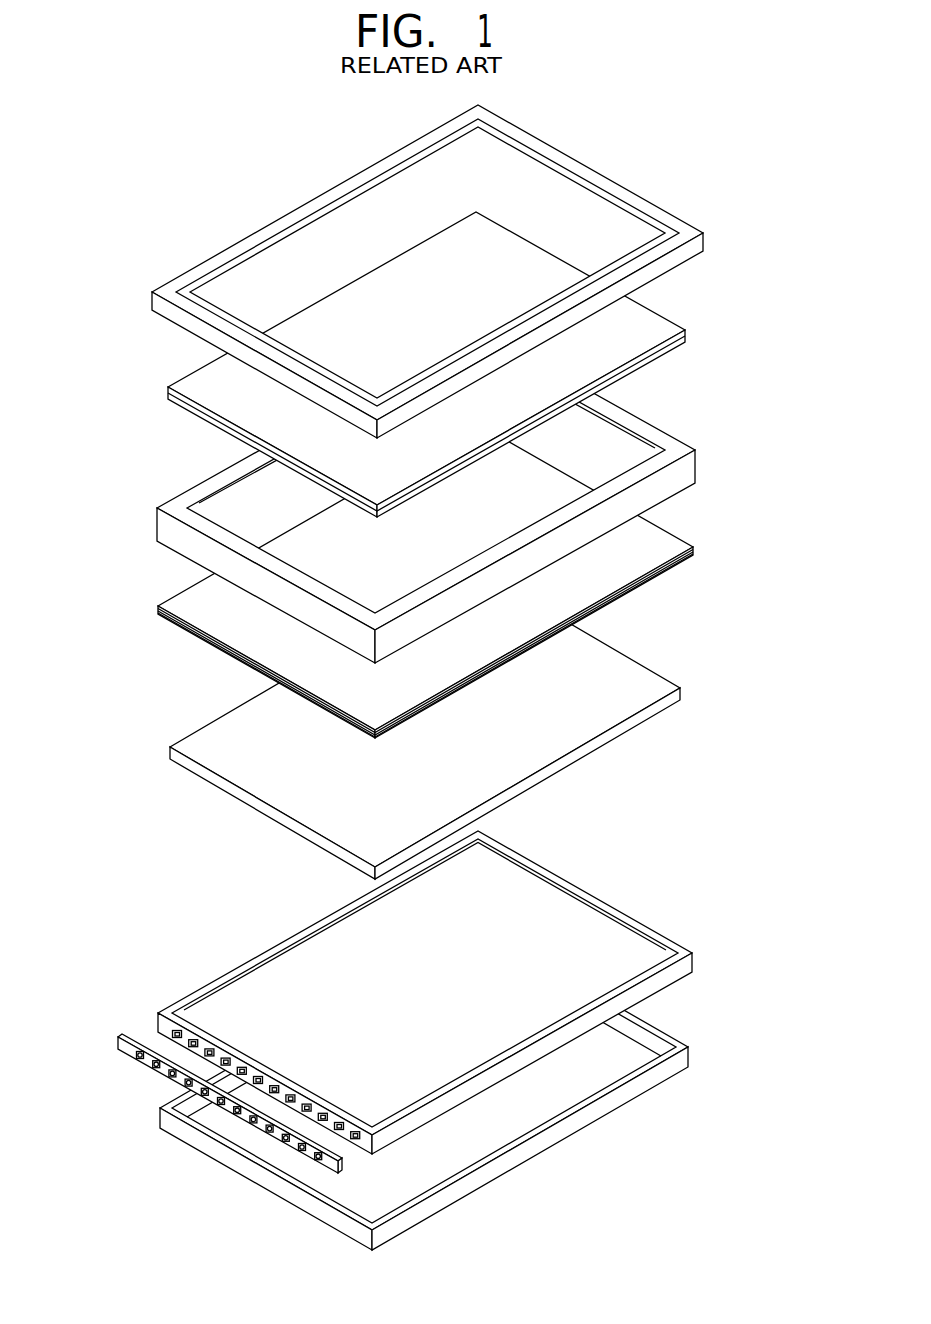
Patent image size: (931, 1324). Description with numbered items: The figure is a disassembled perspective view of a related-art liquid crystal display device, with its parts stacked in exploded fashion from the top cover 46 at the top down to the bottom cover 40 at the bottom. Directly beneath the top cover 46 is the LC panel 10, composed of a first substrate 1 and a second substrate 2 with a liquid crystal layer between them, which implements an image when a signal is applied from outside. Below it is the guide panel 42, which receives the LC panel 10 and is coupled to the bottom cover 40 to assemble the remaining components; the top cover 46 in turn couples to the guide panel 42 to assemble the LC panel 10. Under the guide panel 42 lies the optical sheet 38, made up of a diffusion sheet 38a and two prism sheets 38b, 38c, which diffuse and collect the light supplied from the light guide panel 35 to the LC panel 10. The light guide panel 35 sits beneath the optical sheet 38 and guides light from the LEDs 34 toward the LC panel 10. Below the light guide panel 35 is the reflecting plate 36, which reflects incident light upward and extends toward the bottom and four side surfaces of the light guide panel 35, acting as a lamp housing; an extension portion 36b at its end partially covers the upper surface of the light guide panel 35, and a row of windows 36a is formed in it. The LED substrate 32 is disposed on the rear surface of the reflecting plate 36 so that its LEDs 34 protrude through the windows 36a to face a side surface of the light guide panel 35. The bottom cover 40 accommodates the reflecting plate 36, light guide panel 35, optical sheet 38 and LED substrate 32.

The LC panel 10 is at (682, 304).
The top cover 46 is at (698, 244).
The second substrate 2 is at (453, 364).
The first substrate 1 is at (683, 339).
The guide panel 42 is at (683, 449).
The optical sheet 38 is at (491, 580).
The diffusion sheet 38a is at (472, 645).
The prism sheet 38b is at (693, 551).
The prism sheet 38c is at (685, 542).
The light guide panel 35 is at (668, 680).
The reflecting plate 36 is at (417, 992).
The windows 36a is at (160, 1037).
The extension portion 36b is at (195, 1023).
The LED substrate 32 is at (193, 1101).
The LEDs 34 is at (138, 1062).
The bottom cover 40 is at (690, 1060).